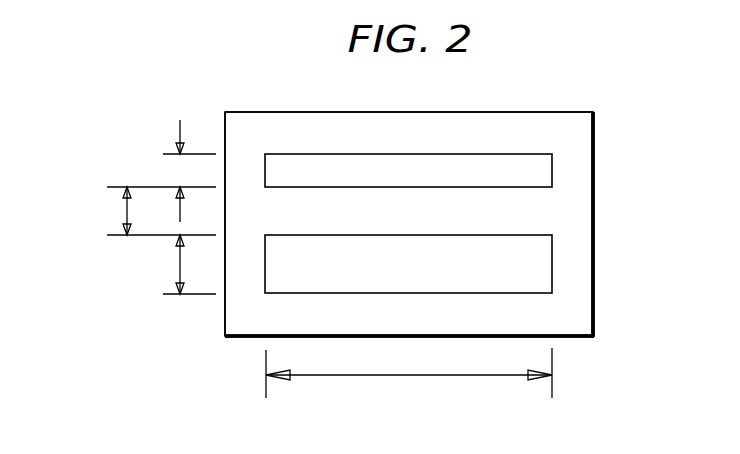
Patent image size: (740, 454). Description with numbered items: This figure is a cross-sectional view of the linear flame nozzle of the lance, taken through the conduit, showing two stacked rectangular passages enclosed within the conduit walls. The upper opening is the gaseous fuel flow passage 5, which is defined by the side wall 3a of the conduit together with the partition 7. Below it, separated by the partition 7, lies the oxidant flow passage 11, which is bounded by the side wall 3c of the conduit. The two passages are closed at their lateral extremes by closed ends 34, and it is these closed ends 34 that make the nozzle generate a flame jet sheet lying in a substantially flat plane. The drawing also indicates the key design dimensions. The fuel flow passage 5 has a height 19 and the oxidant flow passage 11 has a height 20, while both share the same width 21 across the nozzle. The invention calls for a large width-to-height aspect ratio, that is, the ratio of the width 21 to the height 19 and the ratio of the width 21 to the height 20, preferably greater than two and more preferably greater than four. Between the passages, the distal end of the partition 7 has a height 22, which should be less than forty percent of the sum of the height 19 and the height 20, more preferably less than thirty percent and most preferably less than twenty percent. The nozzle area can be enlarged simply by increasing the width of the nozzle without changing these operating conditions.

The side wall 3a is at (517, 112).
The side wall 3c is at (572, 337).
The fuel flow passage 5 is at (326, 170).
The partition 7 is at (508, 214).
The oxidant flow passage 11 is at (414, 274).
The height of fuel flow passage 19 is at (180, 172).
The height of oxidant flow passage 20 is at (180, 268).
The width 21 is at (388, 375).
The height of distal end of partition 22 is at (127, 213).
The closed ends 34 is at (595, 287).